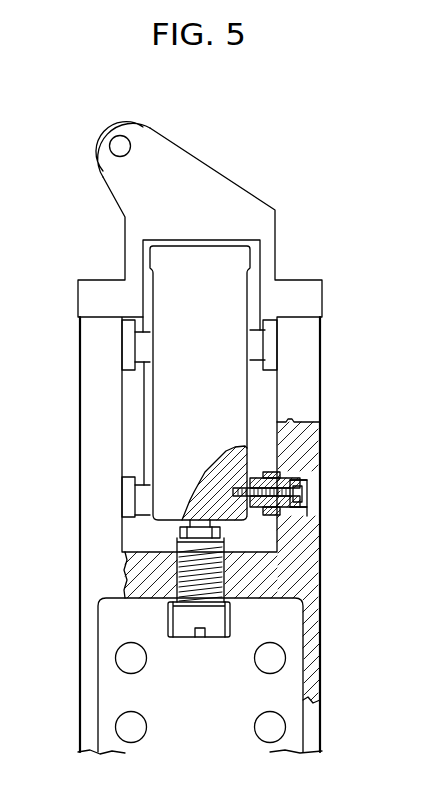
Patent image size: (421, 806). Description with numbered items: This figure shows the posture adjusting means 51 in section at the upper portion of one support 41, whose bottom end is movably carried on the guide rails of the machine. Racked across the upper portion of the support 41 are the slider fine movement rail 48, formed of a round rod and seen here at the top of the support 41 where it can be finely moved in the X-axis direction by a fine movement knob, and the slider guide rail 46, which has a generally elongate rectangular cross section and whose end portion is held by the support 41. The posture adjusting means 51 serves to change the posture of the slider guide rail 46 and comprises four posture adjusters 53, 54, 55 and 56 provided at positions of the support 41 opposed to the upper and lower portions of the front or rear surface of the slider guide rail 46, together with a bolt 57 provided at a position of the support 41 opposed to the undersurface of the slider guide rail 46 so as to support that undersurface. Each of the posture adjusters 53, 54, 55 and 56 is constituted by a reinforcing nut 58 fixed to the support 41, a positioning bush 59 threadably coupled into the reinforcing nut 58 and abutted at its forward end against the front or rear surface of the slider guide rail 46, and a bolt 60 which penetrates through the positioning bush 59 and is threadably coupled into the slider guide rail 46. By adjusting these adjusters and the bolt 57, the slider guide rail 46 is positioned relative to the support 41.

The support 41 is at (84, 686).
The slider guide rail 46 is at (238, 263).
The slider fine movement rail 48 is at (110, 147).
The posture adjusting means 51 is at (352, 302).
The posture adjuster 53 is at (122, 346).
The posture adjuster 54 is at (122, 492).
The posture adjuster 55 is at (264, 349).
The posture adjuster 56 is at (313, 502).
The bolt 57 is at (232, 621).
The reinforcing nut 58 is at (296, 510).
The positioning bush 59 is at (258, 473).
The bolt 60 is at (306, 490).